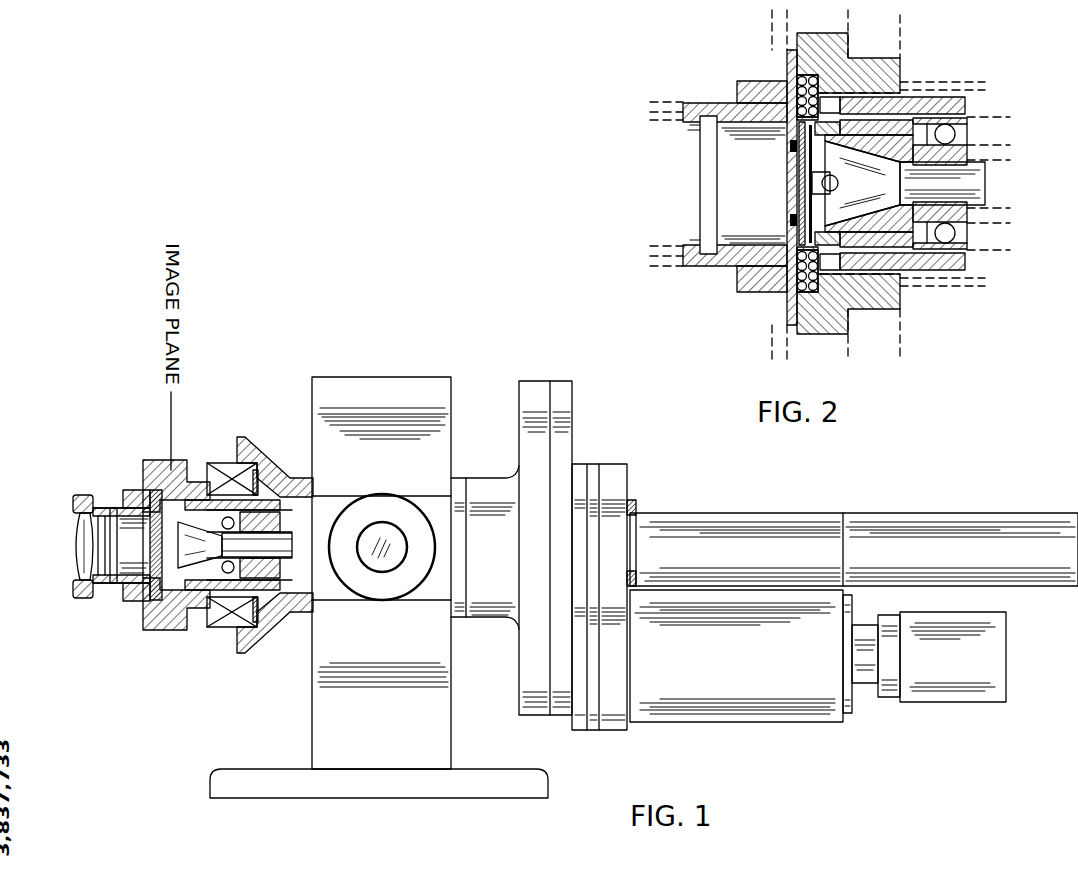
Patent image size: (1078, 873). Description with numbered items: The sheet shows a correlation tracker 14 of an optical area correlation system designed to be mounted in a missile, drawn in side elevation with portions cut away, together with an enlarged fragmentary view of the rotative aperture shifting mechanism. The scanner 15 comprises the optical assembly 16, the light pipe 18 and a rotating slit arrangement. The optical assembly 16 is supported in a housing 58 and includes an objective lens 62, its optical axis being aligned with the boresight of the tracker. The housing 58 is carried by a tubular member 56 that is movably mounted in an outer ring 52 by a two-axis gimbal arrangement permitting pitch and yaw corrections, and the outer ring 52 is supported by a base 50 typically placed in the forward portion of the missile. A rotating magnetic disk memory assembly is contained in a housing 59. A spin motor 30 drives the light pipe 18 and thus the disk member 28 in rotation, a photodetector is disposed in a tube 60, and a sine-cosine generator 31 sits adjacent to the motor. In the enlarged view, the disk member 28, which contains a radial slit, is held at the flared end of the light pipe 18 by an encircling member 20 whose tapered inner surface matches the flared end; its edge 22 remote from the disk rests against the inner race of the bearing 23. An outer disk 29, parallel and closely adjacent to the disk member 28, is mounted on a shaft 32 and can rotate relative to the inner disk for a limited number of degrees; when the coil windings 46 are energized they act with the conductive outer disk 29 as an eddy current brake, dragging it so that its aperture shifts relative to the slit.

In FIG. 1, the correlation tracker 14 is at (438, 362).
In FIG. 1, the scanner 15 is at (218, 650).
In FIG. 1, the optical assembly 16 is at (104, 602).
In FIG. 1, the light pipe 18 is at (277, 552).
In FIG. 2, the light pipe 18 is at (960, 168).
In FIG. 2, the encircling member 20 is at (886, 140).
In FIG. 2, the edge 22 is at (912, 232).
In FIG. 2, the bearing 23 is at (977, 227).
In FIG. 2, the disk member 28 is at (838, 268).
In FIG. 2, the outer disk 29 is at (793, 105).
In FIG. 1, the spin motor 30 is at (800, 690).
In FIG. 1, the sine-cosine generator 31 is at (975, 680).
In FIG. 2, the shaft 32 is at (800, 176).
In FIG. 2, the coil windings 46 is at (800, 297).
In FIG. 1, the base 50 is at (438, 722).
In FIG. 1, the outer ring 52 is at (368, 385).
In FIG. 1, the tubular member 56 is at (300, 482).
In FIG. 1, the housing 58 is at (165, 628).
In FIG. 1, the housing 59 is at (534, 390).
In FIG. 1, the tube 60 is at (768, 515).
In FIG. 1, the objective lens 62 is at (85, 545).